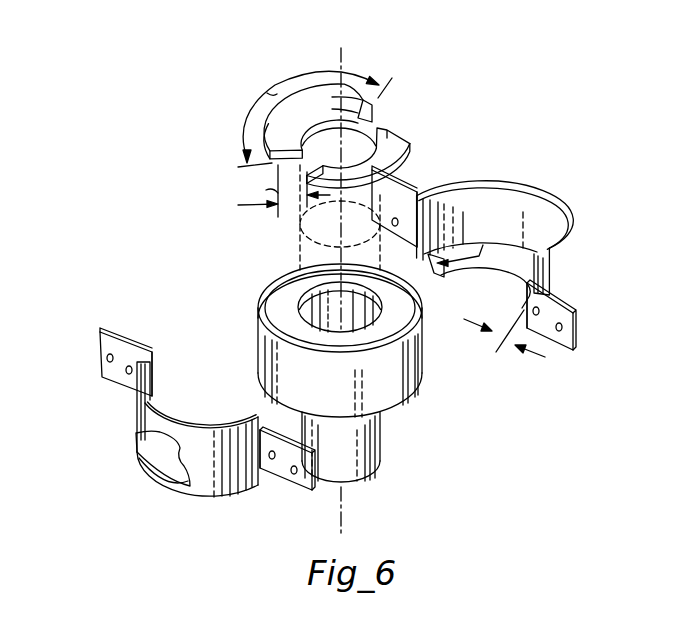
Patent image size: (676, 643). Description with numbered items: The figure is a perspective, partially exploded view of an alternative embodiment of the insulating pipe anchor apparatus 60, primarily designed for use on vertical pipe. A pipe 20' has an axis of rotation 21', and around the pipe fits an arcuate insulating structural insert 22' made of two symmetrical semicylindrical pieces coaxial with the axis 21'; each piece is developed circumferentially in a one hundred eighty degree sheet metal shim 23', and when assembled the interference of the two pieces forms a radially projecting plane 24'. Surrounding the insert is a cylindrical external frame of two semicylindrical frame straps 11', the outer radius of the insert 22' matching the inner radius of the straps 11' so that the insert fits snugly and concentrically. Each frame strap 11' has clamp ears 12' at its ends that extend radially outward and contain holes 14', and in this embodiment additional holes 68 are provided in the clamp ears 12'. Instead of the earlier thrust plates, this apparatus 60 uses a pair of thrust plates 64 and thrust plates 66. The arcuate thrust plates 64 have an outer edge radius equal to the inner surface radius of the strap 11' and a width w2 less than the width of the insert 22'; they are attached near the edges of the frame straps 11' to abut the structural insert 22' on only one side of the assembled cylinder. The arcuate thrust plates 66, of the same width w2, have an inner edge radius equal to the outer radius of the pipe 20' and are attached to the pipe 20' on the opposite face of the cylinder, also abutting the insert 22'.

The axis of rotation 21' is at (363, 280).
The thrust plates 66 is at (378, 120).
The insulating pipe anchor apparatus 60 is at (341, 388).
The insulating structural insert 22' is at (341, 340).
The shim 23' is at (328, 305).
The plane 24' is at (321, 308).
The pipe 20' is at (347, 462).
The frame straps 11' is at (363, 339).
The clamp ears 12' is at (323, 328).
The holes 14' is at (359, 340).
The thrust plates 64 is at (333, 361).
The additional holes 68 is at (420, 196).